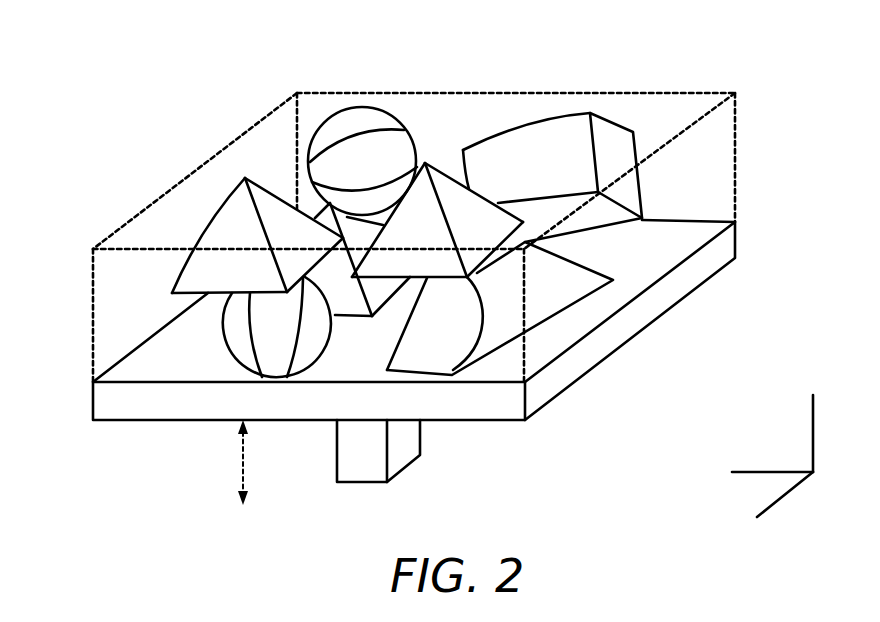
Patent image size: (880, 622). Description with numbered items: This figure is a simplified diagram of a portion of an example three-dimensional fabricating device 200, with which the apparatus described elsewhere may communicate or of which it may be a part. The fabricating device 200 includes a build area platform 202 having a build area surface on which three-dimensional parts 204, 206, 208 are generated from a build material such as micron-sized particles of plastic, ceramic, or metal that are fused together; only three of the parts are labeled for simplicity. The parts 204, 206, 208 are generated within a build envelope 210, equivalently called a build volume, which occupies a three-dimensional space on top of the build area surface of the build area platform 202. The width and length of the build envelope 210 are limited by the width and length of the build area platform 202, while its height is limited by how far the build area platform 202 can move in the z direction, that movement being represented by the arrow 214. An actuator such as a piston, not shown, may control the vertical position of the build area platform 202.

The 3D fabricating device 200 is at (146, 59).
The build area platform 202 is at (575, 382).
The 3D part 204 is at (236, 358).
The 3D part 206 is at (357, 317).
The 3D part 208 is at (513, 128).
The build envelope 210 is at (328, 92).
The arrow 214 is at (243, 485).